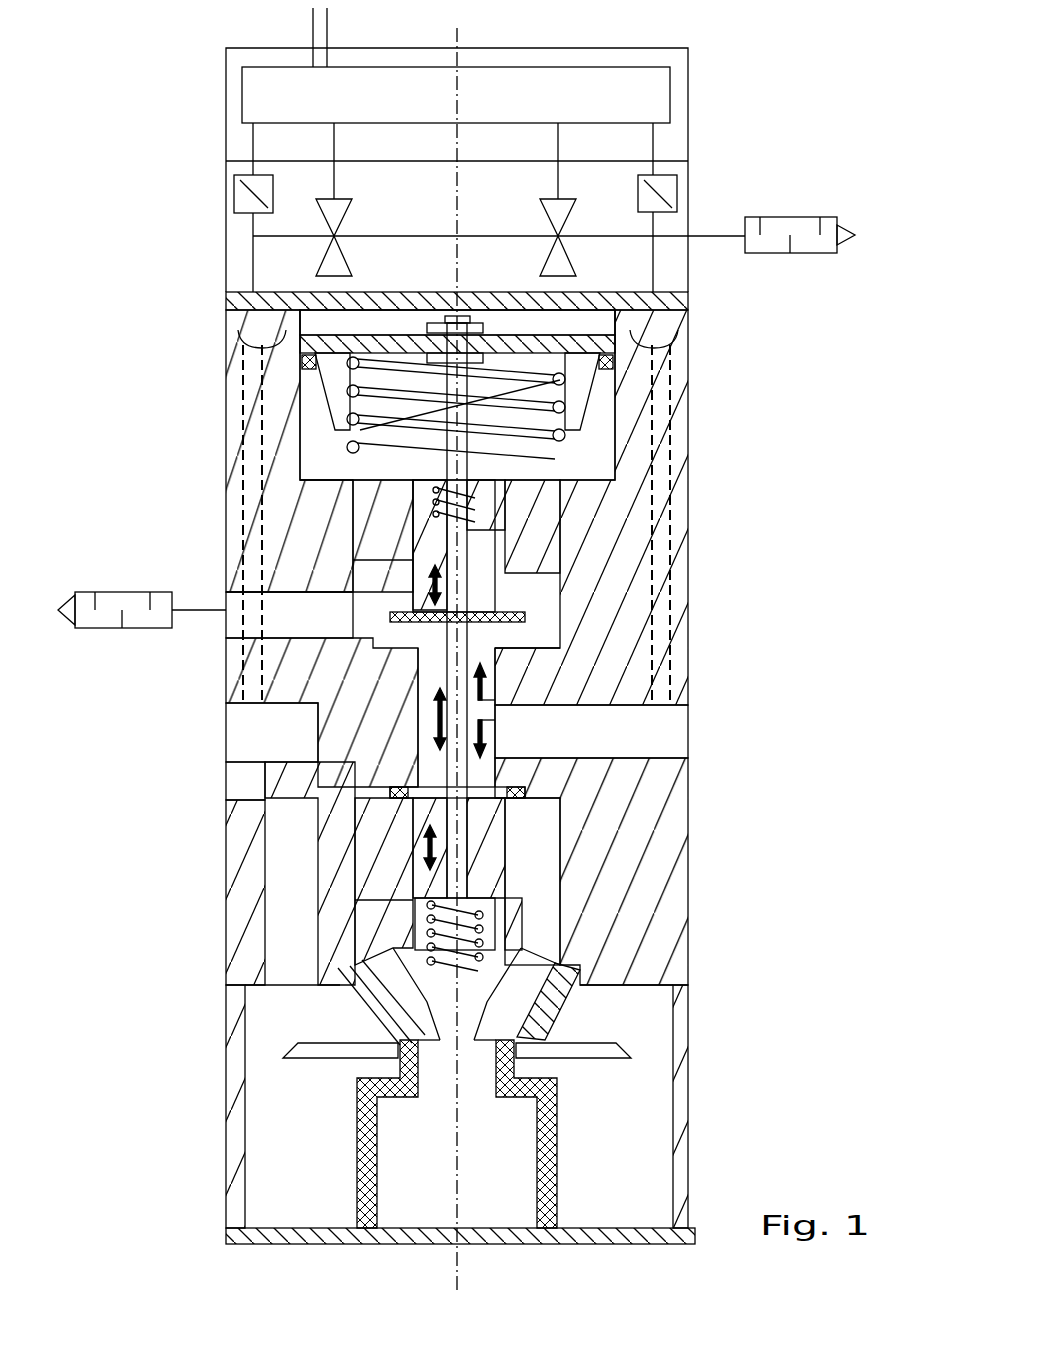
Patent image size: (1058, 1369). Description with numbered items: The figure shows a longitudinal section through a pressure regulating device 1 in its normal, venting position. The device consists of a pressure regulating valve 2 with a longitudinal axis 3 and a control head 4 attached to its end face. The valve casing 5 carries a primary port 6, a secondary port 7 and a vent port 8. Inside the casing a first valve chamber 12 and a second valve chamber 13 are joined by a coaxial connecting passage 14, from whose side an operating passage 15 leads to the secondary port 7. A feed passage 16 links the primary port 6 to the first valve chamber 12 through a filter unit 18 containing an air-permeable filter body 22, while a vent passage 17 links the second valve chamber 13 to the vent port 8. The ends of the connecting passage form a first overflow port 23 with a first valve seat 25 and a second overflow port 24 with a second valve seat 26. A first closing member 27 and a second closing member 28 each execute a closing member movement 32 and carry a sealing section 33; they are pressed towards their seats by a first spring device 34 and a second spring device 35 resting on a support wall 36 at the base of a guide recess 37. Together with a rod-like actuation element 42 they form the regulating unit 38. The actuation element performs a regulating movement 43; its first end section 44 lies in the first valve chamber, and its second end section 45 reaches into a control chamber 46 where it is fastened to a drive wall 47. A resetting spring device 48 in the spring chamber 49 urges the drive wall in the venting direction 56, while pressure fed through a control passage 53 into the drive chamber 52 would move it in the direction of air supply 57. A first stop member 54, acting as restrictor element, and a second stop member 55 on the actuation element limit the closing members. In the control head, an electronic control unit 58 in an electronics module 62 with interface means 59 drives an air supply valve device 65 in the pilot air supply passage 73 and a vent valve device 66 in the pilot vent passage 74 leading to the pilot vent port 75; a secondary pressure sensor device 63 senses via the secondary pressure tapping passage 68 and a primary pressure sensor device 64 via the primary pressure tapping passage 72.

The pressure regulating device 1 is at (745, 100).
The pressure regulating valve 2 is at (697, 462).
The longitudinal axis 3 is at (457, 1275).
The control head 4 is at (700, 98).
The valve casing 5 is at (688, 633).
The primary port 6 is at (226, 740).
The secondary port 7 is at (690, 727).
The vent port 8 is at (226, 630).
The first valve chamber 12 is at (545, 905).
The second valve chamber 13 is at (600, 575).
The connecting passage 14 is at (421, 680).
The operating passage 15 is at (690, 743).
The feed passage 16 is at (265, 865).
The vent passage 17 is at (300, 605).
The filter unit 18 is at (697, 1135).
The filter body 22 is at (555, 1178).
The first overflow port 23 is at (420, 767).
The second overflow port 24 is at (413, 663).
The first valve seat 25 is at (517, 825).
The second valve seat 26 is at (365, 546).
The first closing member 27 is at (505, 838).
The second closing member 28 is at (525, 548).
The closing member movement 32 is at (413, 578).
The sealing section 33 is at (395, 615).
The first spring device 34 is at (500, 938).
The second spring device 35 is at (500, 493).
The support wall 36 is at (425, 470).
The guide recess 37 is at (420, 548).
The regulating unit 38 is at (565, 630).
The actuation element 42 is at (500, 717).
The regulating movement 43 is at (419, 727).
The first end section 44 is at (480, 873).
The second end section 45 is at (330, 405).
The control chamber 46 is at (303, 392).
The drive wall 47 is at (388, 345).
The resetting spring device 48 is at (620, 415).
The spring chamber 49 is at (575, 385).
The drive chamber 52 is at (600, 318).
The control passage 53 is at (462, 300).
The first stop member 54 is at (385, 795).
The second stop member 55 is at (520, 618).
The venting direction 56 is at (500, 683).
The direction of air supply 57 is at (485, 745).
The electronic control unit 58 is at (258, 86).
The interface means 59 is at (313, 30).
The electronics module 62 is at (226, 126).
The secondary pressure sensor device 63 is at (682, 188).
The primary pressure sensor device 64 is at (236, 195).
The air supply valve device 65 is at (343, 190).
The vent valve device 66 is at (575, 190).
The secondary pressure tapping passage 68 is at (668, 535).
The primary pressure tapping passage 72 is at (245, 380).
The pilot air supply passage 73 is at (432, 236).
The pilot vent passage 74 is at (483, 236).
The pilot vent port 75 is at (688, 236).